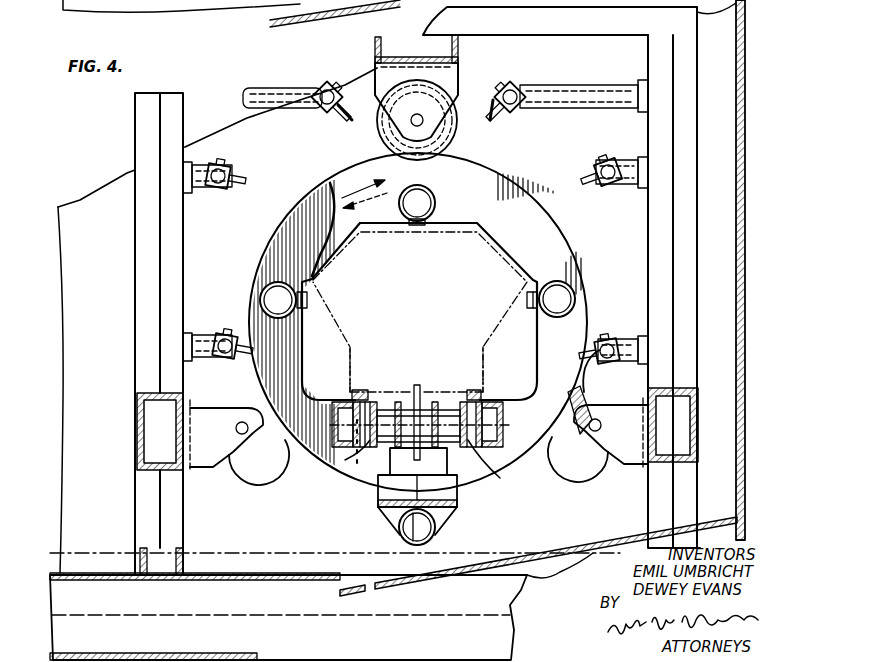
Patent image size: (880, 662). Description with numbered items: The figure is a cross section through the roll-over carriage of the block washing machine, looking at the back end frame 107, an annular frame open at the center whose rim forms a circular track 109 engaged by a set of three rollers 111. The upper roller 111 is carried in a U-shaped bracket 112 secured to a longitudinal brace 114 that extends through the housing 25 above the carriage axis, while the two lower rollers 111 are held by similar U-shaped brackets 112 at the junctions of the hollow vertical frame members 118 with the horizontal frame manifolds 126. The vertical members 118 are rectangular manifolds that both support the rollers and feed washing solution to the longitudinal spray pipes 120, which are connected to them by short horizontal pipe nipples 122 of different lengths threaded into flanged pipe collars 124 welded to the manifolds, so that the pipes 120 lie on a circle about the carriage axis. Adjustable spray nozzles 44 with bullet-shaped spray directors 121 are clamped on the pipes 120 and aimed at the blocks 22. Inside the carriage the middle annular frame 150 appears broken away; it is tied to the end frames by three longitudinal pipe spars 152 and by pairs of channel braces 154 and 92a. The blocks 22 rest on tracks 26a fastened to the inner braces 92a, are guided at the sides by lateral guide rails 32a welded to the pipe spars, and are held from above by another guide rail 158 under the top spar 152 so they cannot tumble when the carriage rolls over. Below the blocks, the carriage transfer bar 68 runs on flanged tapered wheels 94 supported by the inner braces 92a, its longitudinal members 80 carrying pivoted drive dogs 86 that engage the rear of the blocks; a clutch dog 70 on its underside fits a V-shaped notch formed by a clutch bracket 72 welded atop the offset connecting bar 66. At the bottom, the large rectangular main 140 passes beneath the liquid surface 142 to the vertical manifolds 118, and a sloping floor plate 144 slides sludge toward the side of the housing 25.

The blocks 22 is at (425, 302).
The housing 25 is at (748, 97).
The tracks 26a is at (358, 388).
The lateral guide rails 32a is at (310, 298).
The adjustable spray nozzles 44 is at (246, 190).
The offset connecting bar 66 is at (435, 534).
The carriage transfer bar 68 is at (433, 382).
The clutch dog 70 is at (447, 490).
The clutch bracket 72 is at (457, 498).
The longitudinal members 80 is at (398, 402).
The drive dogs 86 is at (417, 385).
The inner channel braces 92a is at (425, 469).
The flanged tapered wheels 94 is at (490, 420).
The back end frame 107 is at (490, 181).
The circular track 109 is at (571, 247).
The rollers 111 is at (445, 128).
The U-shaped bracket 112 is at (452, 80).
The longitudinal brace 114 is at (457, 47).
The hollow vertical frame members 118 is at (133, 134).
The longitudinal spray pipes 120 is at (220, 188).
The bullet-shaped spray directors 121 is at (243, 182).
The horizontal pipe nipples 122 is at (283, 88).
The flanged pipe collars 124 is at (195, 165).
The horizontal frame manifolds 126 is at (137, 424).
The rectangular main 140 is at (210, 575).
The liquid surface 142 is at (315, 552).
The sloping floor plate 144 is at (566, 552).
The middle annular frame 150 is at (316, 203).
The longitudinal pipe spars 152 is at (422, 188).
The channel braces 154 is at (340, 400).
The guide rail 158 is at (405, 227).